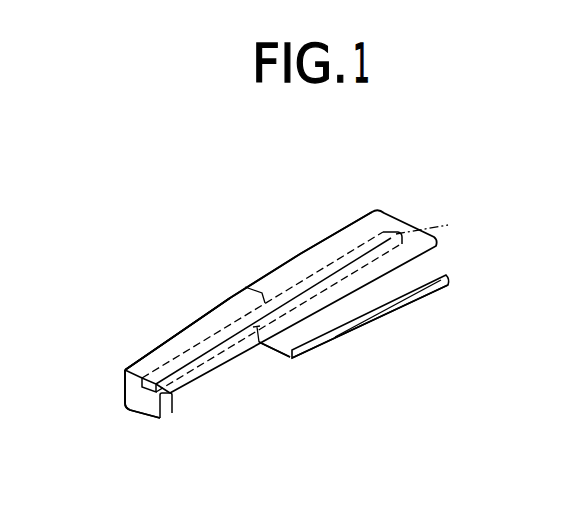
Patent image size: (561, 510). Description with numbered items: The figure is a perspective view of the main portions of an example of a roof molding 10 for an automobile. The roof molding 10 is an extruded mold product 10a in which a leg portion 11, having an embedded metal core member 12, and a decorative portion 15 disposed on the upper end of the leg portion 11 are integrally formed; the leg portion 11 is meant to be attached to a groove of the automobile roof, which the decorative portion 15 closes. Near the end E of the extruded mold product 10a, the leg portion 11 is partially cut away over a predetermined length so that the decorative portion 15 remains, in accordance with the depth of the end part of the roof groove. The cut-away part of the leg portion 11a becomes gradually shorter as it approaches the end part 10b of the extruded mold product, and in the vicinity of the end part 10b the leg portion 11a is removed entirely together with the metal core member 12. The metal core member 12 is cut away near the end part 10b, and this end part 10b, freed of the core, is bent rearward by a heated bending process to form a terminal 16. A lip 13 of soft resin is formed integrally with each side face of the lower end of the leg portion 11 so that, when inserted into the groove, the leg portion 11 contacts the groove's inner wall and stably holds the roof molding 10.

The roof molding 10 is at (396, 208).
The extruded mold product 10a is at (275, 268).
The end part of the extruded mold product 10b is at (128, 410).
The leg portion 11 is at (405, 276).
The cut-away part of the leg portion 11a is at (233, 371).
The metal core member 12 is at (440, 228).
The lip 13 is at (384, 319).
The decorative portion 15 is at (334, 246).
The terminal 16 is at (181, 336).
The end of the extruded mold product E is at (168, 418).